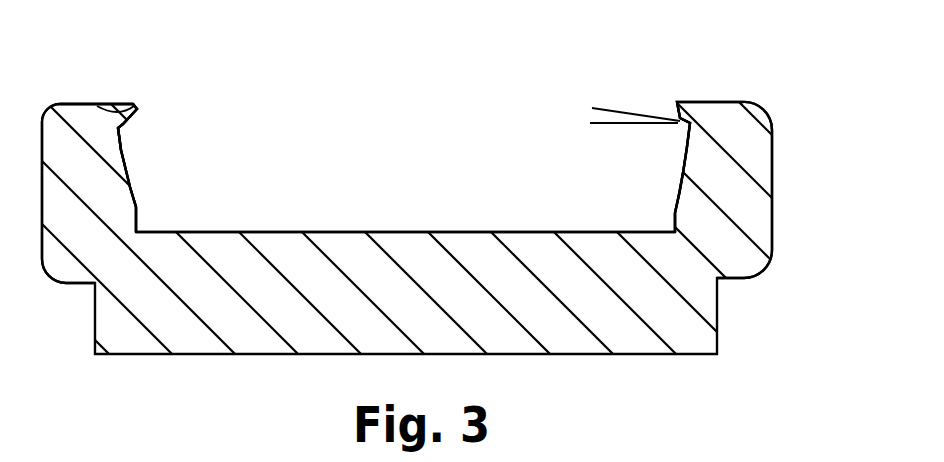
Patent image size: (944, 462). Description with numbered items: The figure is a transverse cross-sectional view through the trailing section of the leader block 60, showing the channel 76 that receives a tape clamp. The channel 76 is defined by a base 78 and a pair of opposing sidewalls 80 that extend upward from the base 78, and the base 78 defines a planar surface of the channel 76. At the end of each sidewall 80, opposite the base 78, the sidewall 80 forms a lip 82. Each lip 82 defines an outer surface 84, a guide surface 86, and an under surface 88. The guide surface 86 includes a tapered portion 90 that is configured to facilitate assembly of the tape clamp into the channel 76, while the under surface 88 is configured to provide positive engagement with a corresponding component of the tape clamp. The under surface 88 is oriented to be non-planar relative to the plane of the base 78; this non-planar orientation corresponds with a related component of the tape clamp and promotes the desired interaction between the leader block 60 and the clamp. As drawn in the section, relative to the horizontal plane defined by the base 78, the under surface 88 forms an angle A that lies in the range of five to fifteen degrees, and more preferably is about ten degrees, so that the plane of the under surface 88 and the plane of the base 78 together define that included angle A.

The leader block 60 is at (392, 93).
The channel 76 is at (180, 181).
The base 78 is at (384, 231).
The opposing sidewalls 80 is at (145, 205).
The lip 82 is at (672, 102).
The outer surface 84 is at (118, 105).
The guide surface 86 is at (137, 111).
The under surface 88 is at (122, 130).
The tapered portion 90 is at (93, 105).
The angle A is at (604, 150).